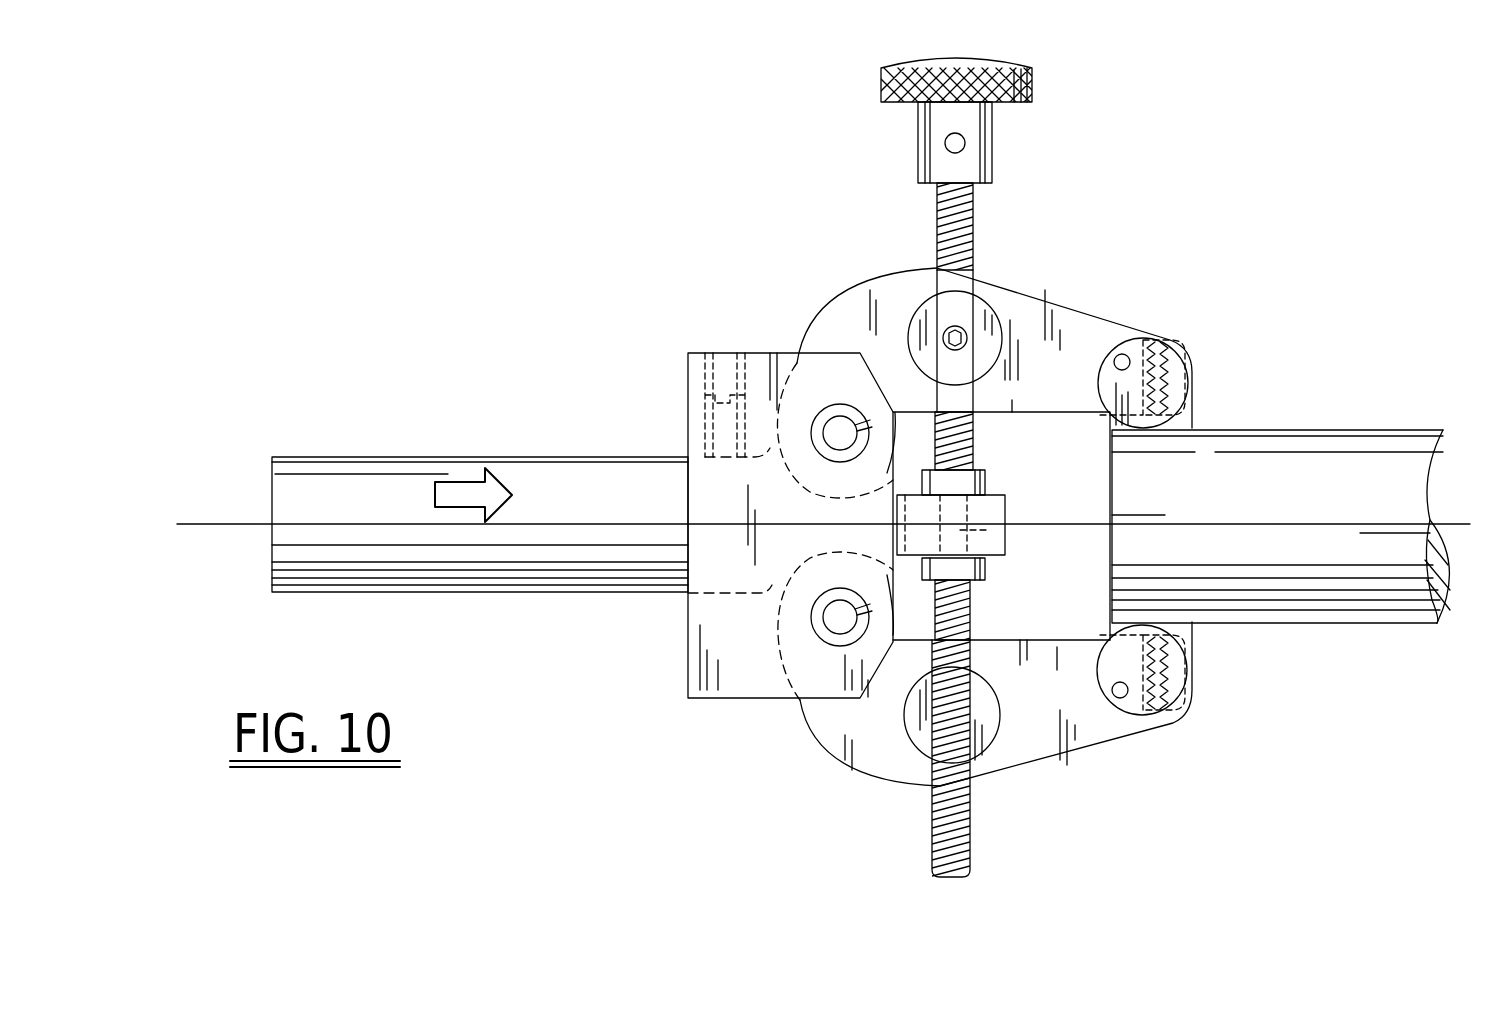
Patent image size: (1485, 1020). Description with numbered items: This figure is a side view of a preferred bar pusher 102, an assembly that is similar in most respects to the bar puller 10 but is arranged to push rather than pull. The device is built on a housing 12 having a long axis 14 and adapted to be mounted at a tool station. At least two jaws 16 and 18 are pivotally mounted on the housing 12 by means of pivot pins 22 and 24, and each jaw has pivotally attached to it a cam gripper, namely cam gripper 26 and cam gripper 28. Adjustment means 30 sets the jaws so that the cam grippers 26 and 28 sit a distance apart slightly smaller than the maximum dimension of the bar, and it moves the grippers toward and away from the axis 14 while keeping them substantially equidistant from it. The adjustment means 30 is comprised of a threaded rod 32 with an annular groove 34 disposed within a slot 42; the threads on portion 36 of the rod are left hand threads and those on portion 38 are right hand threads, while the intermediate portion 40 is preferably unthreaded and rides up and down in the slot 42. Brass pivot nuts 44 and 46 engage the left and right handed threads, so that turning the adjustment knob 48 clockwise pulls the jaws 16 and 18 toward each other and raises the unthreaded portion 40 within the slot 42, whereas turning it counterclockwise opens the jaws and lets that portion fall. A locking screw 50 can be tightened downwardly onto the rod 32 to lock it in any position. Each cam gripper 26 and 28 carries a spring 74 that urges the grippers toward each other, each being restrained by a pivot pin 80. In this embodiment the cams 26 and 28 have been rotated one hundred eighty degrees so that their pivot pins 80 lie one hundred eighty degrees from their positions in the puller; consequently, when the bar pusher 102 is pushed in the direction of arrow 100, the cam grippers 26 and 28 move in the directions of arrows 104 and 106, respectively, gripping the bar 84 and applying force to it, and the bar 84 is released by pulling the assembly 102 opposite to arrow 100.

The bar puller 10 is at (1150, 110).
The housing 12 is at (662, 400).
The long axis 14 is at (233, 522).
The jaw 16 is at (1118, 312).
The jaw 18 is at (993, 768).
The pivot pin 22 is at (845, 405).
The pivot pin 24 is at (840, 643).
The cam gripper 26 is at (1100, 392).
The cam gripper 28 is at (1105, 662).
The adjustment means 30 is at (848, 130).
The threaded rod 32 is at (973, 237).
The annular groove 34 is at (1000, 512).
The left hand threaded portion 36 is at (937, 215).
The right hand threaded portion 38 is at (970, 606).
The intermediate portion 40 is at (1007, 545).
The slot 42 is at (985, 492).
The brass pivot nut 44 is at (1003, 345).
The brass pivot nut 46 is at (985, 725).
The adjustment knob 48 is at (1032, 92).
The locking screw 50 is at (945, 330).
The spring 74 is at (1180, 395).
The pivot pin 80 is at (1128, 355).
The bar 84 is at (1340, 625).
The arrow 100 is at (470, 482).
The bar pusher 102 is at (672, 250).
The arrow 104 is at (1185, 318).
The arrow 106 is at (1175, 733).